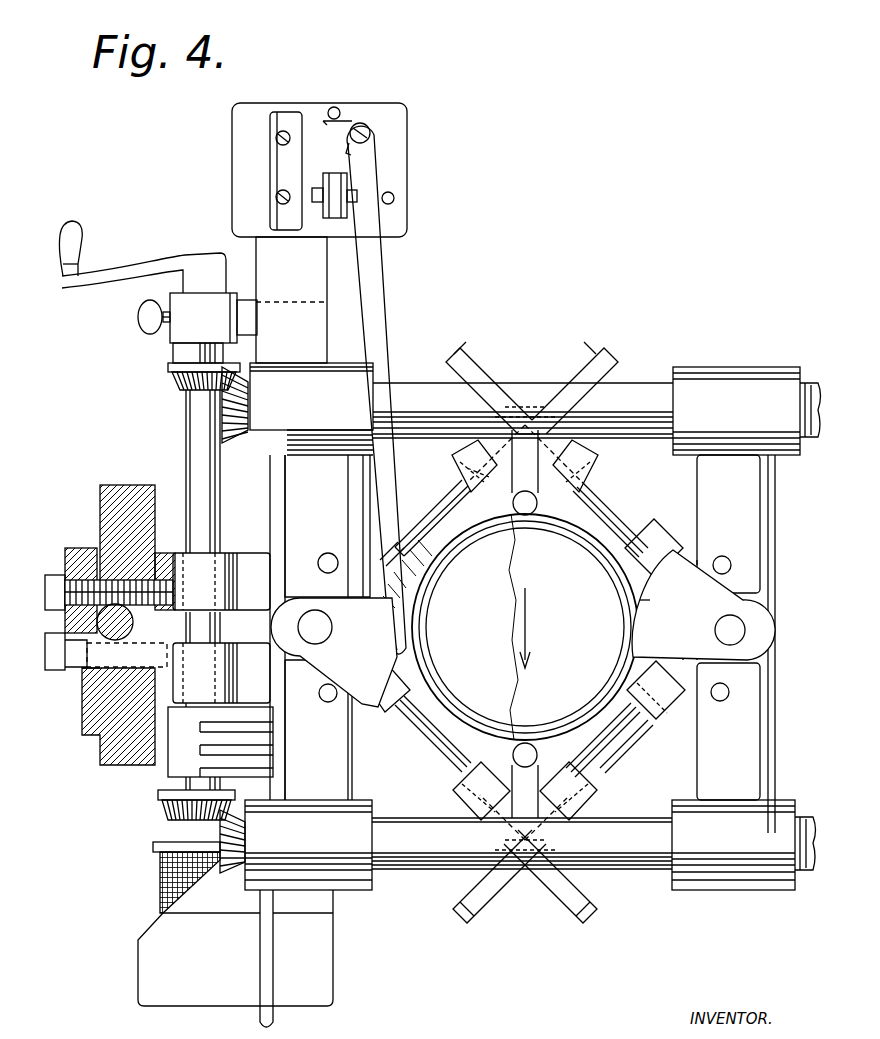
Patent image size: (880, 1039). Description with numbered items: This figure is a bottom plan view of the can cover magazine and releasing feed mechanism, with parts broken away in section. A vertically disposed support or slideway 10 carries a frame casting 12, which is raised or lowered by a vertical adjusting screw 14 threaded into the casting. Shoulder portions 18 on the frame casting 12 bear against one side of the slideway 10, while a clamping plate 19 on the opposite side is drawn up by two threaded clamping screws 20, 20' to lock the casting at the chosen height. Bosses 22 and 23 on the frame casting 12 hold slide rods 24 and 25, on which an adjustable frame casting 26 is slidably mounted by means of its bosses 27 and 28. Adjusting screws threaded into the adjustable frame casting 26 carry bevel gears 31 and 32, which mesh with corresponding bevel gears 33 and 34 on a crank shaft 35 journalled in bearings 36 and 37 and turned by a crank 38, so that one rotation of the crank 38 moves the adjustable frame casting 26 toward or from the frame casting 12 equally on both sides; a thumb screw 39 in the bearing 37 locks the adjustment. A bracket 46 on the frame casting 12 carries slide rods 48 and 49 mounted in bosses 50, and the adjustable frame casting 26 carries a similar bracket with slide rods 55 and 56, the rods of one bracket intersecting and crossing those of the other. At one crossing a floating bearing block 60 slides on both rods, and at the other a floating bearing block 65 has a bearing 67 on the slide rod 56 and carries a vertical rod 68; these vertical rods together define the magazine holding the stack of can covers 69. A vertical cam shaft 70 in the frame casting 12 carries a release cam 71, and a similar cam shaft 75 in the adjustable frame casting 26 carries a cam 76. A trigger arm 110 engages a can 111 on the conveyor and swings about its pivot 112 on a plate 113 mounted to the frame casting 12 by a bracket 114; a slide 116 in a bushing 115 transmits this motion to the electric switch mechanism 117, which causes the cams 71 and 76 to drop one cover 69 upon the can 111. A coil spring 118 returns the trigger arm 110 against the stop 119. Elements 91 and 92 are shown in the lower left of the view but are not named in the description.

The vertical support or slideway 10 is at (104, 490).
The frame casting 12 is at (170, 758).
The vertical adjusting screw 14 is at (128, 630).
The shoulder portions 18 is at (162, 553).
The clamping plate 19 is at (65, 698).
The threaded clamping screws 20 is at (69, 576).
The lower clamp plate 20' is at (72, 710).
The boss 22 is at (320, 870).
The boss 23 is at (326, 415).
The slide rod 24 is at (405, 868).
The slide rod 25 is at (425, 385).
The adjustable frame casting 26 is at (752, 760).
The boss 27 is at (722, 890).
The boss 28 is at (730, 380).
The bevel gear 31 is at (218, 835).
The bevel gear 32 is at (222, 406).
The bevel gear 33 is at (155, 822).
The bevel gear 34 is at (168, 376).
The crank shaft 35 is at (186, 457).
The bearing 36 is at (178, 788).
The bearing 37 is at (210, 324).
The crank 38 is at (132, 270).
The thumb screw 39 is at (138, 318).
The bracket 46 is at (352, 580).
The slide rod 48 is at (417, 762).
The slide rod 49 is at (448, 482).
The bosses 50 is at (438, 516).
The slide rod 55 is at (630, 735).
The slide rod 56 is at (612, 490).
The floating bearing block 60 is at (527, 383).
The floating bearing block 65 is at (508, 883).
The bearing 67 is at (530, 745).
The vertical rod 68 is at (538, 503).
The can covers 69 is at (625, 757).
The vertical cam shaft 70 is at (325, 636).
The cam 71 is at (362, 661).
The vertical cam shaft 75 is at (745, 628).
The cam 76 is at (636, 615).
The shaft bearing 91 is at (162, 883).
The gear housing 92 is at (160, 988).
The trigger arm 110 is at (380, 292).
The can 111 is at (445, 695).
The pivot 112 is at (370, 122).
The plate 113 is at (406, 132).
The bracket 114 is at (313, 288).
The bushing 115 is at (345, 185).
The slide 116 is at (355, 204).
The electric switch mechanism 117 is at (282, 185).
The coil spring 118 is at (345, 118).
The stop 119 is at (395, 198).